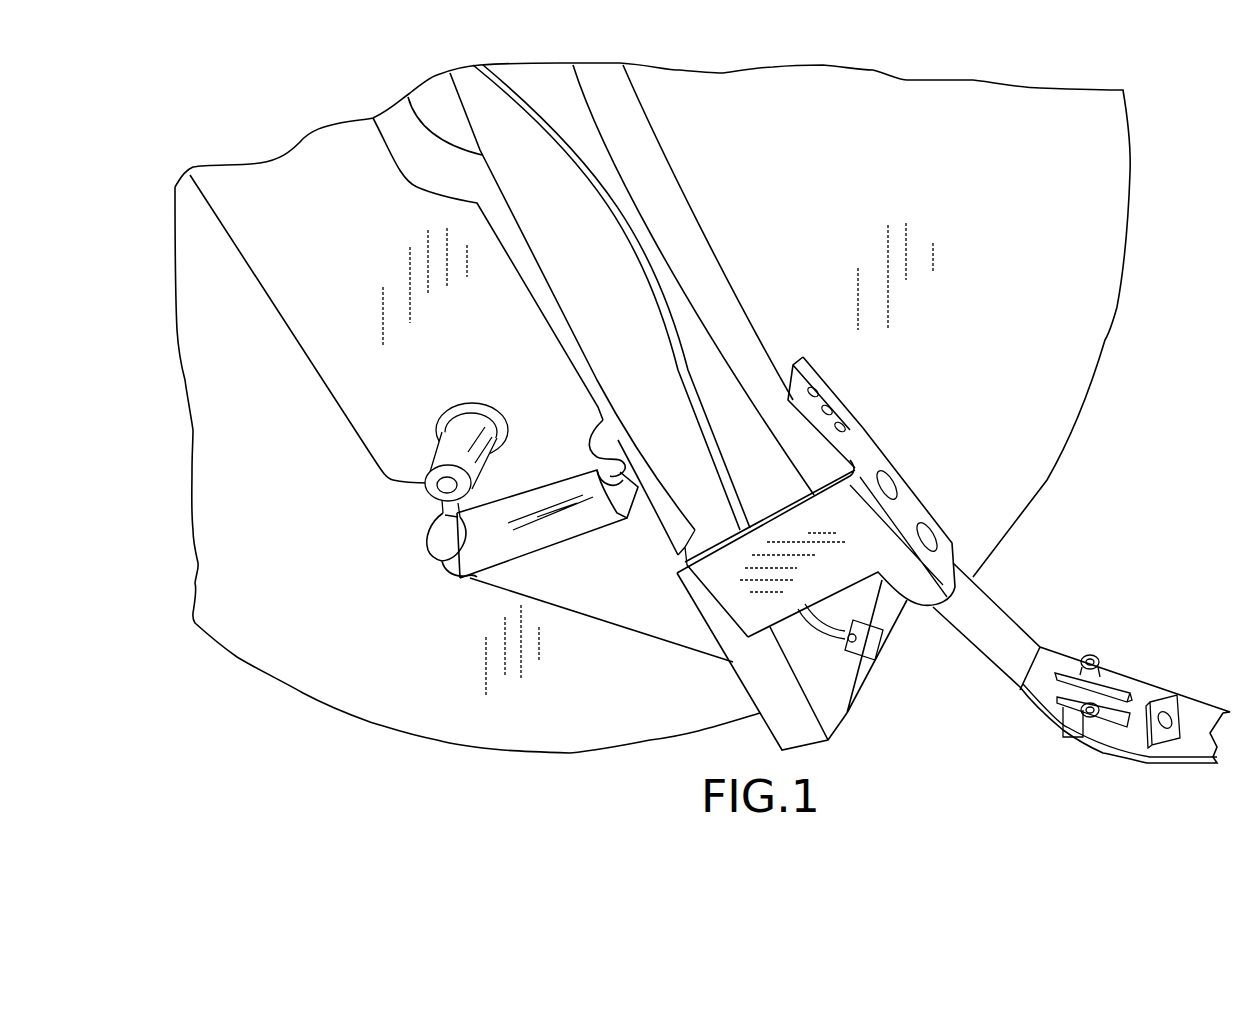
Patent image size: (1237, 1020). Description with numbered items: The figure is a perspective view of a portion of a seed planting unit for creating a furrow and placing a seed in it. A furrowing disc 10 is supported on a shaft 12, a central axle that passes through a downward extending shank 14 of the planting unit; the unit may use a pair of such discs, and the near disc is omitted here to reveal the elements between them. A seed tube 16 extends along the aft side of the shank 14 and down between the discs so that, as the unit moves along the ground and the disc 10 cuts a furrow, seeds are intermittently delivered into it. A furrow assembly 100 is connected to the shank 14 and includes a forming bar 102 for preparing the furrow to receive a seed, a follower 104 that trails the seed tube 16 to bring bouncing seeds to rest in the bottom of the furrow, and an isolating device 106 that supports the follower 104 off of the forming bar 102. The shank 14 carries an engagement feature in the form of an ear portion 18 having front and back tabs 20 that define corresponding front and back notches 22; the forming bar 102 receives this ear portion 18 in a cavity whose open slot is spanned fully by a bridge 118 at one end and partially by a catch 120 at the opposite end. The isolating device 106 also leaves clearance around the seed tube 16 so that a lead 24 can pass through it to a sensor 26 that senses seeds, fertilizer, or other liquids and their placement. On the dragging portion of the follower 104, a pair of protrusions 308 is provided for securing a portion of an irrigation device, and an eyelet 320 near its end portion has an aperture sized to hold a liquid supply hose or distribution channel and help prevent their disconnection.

The furrowing disc 10 is at (1117, 308).
The shaft 12 is at (442, 452).
The downward extending shank 14 is at (370, 453).
The seed tube 16 is at (730, 288).
The ear portion 18 is at (485, 505).
The front and back tabs 20 is at (433, 547).
The front and back notches 22 is at (435, 500).
The lead 24 is at (647, 243).
The sensor 26 is at (860, 663).
The furrow assembly 100 is at (953, 598).
The forming bar 102 is at (655, 623).
The follower 104 is at (1037, 650).
The isolating device 106 is at (853, 540).
The bridge 118 is at (447, 520).
The catch 120 is at (620, 442).
The protrusions 308 is at (1092, 655).
The eyelet 320 is at (1155, 745).